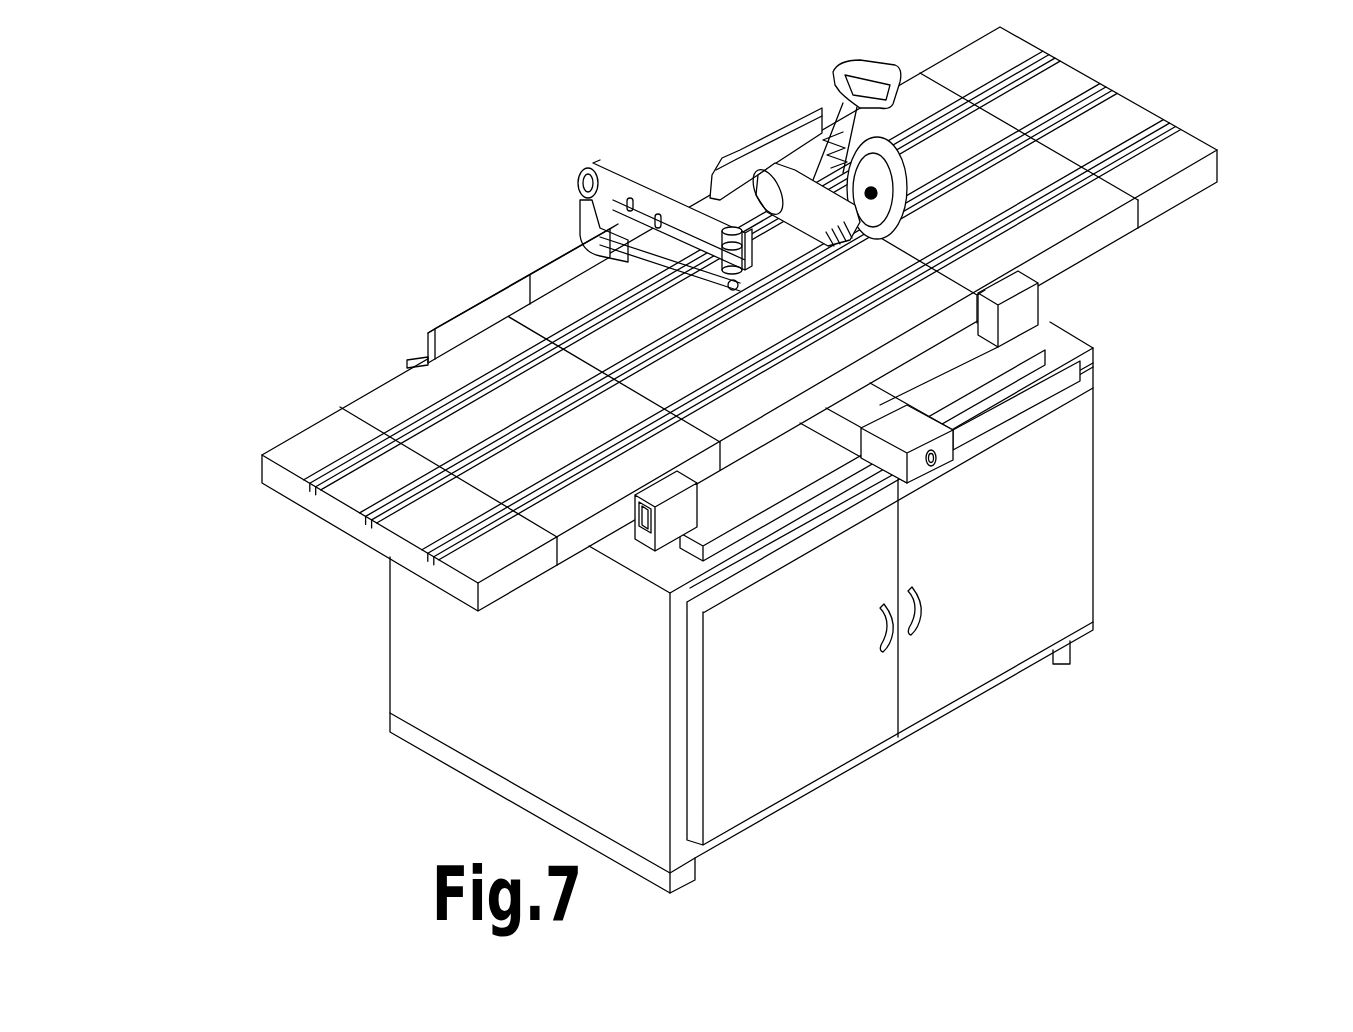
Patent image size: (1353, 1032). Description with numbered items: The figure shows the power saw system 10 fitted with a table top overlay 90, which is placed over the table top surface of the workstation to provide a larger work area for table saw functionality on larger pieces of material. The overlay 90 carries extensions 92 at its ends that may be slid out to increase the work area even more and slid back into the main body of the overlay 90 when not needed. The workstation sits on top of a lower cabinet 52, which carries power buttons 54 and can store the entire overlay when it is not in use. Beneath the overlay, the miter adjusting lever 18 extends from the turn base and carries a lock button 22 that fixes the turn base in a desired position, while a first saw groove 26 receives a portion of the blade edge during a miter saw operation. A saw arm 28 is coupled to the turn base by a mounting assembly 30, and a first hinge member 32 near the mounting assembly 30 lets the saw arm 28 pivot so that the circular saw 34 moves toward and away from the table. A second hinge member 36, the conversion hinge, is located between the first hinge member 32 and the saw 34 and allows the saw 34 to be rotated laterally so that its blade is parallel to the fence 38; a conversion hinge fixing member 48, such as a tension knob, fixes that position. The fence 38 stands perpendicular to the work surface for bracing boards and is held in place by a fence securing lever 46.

The power saw system 10 is at (352, 206).
The miter adjusting lever 18 is at (963, 436).
The lock button 22 is at (937, 462).
The first saw groove 26 is at (867, 407).
The saw arm 28 is at (630, 190).
The mounting assembly 30 is at (588, 222).
The first hinge member 32 is at (582, 172).
The circular saw 34 is at (1000, 112).
The second hinge member 36 is at (810, 125).
The fence 38 is at (468, 330).
The fence securing lever 46 is at (412, 368).
The conversion hinge fixing member 48 is at (733, 230).
The lower cabinet 52 is at (530, 743).
The power buttons 54 is at (643, 520).
The table top overlay 90 is at (585, 297).
The extensions 92 is at (313, 448).